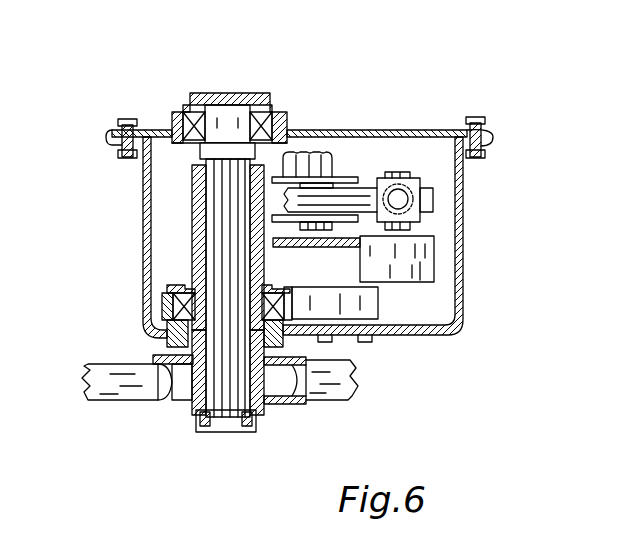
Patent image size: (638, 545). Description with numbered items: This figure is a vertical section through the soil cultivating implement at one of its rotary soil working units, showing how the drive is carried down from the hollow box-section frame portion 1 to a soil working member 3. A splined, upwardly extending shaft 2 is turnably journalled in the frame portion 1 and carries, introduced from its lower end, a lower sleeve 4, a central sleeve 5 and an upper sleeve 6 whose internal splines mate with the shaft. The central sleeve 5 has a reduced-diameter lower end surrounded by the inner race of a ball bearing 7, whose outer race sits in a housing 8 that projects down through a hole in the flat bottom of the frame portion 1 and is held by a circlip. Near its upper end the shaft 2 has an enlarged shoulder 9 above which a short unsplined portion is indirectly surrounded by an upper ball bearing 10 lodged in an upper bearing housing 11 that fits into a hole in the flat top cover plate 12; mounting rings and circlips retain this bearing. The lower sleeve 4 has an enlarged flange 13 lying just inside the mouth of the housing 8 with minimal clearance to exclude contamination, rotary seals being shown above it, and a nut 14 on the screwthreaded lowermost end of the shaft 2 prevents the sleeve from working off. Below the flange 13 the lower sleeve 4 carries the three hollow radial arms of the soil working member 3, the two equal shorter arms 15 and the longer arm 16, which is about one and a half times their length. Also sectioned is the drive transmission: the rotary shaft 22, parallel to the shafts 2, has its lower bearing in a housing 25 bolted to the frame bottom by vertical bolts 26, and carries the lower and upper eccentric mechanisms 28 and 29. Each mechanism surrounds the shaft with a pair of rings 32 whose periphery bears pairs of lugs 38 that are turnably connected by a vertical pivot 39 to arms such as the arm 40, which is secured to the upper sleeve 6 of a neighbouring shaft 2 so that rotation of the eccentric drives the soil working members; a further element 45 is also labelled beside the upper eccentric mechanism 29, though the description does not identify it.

The hollow box-section frame portion 1 is at (140, 188).
The shaft 2 is at (220, 205).
The soil working member 3 is at (358, 402).
The lower sleeve 4 is at (176, 400).
The central sleeve 5 is at (192, 238).
The upper sleeve 6 is at (192, 190).
The ball bearing 7 is at (168, 306).
The housing 8 is at (167, 291).
The shoulder 9 is at (199, 150).
The ball bearing 10 is at (194, 128).
The upper bearing housing 11 is at (247, 100).
The top cover plate 12 is at (411, 130).
The flange 13 is at (168, 356).
The nut 14 is at (199, 430).
The arm 15 is at (330, 398).
The arm 16 is at (124, 394).
The shaft 22 is at (309, 152).
The housing 25 is at (360, 304).
The bolts 26 is at (364, 343).
The lower eccentric mechanism 28 is at (436, 254).
The upper eccentric mechanism 29 is at (379, 168).
The rings 32 is at (432, 262).
The lugs 38 is at (342, 179).
The pivot 39 is at (403, 174).
The arm 40 is at (440, 198).
The pin 45 is at (434, 205).